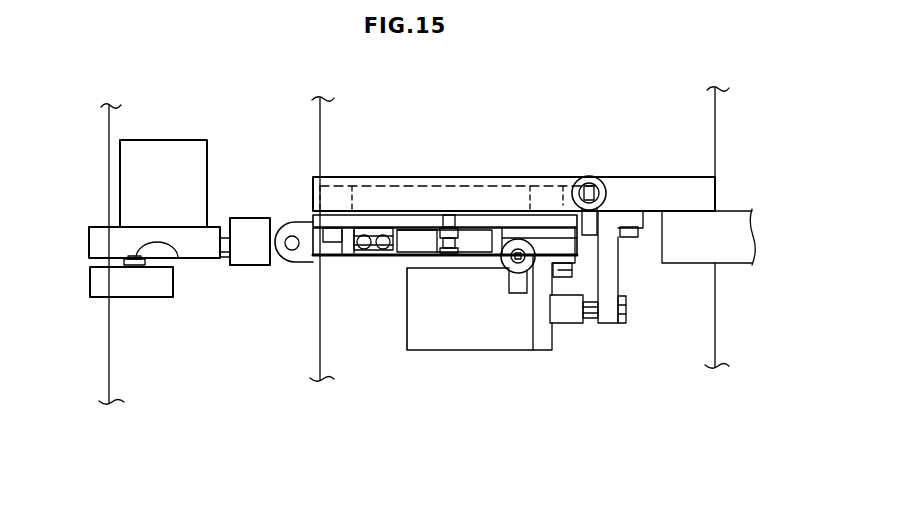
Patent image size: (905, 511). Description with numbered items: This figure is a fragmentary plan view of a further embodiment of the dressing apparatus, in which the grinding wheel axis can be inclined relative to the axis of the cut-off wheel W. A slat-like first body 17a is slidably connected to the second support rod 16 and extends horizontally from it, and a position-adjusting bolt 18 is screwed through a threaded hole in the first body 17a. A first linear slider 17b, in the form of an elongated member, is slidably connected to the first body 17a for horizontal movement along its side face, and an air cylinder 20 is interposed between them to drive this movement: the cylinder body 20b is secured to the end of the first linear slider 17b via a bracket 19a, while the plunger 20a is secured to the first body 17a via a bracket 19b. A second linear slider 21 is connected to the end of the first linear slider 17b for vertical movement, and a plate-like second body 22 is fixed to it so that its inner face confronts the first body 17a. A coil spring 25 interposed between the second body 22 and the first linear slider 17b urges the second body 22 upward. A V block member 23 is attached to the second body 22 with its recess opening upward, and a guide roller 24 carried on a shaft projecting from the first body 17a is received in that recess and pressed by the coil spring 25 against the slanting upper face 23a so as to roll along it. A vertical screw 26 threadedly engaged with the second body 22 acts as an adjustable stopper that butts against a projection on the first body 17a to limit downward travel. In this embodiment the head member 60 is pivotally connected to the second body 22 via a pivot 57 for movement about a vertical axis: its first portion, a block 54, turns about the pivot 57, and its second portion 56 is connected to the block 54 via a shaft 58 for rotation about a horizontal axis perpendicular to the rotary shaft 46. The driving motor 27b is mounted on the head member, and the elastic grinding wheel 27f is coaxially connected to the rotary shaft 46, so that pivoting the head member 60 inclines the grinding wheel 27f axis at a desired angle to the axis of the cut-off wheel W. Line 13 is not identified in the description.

The cut-off wheel W is at (108, 370).
The driving motor 27b is at (178, 148).
The second portion of the head member 56 is at (105, 228).
The rotary shaft 46 is at (160, 255).
The elastic grinding wheel 27f is at (149, 297).
The shaft 58 is at (224, 238).
The block 54 is at (250, 218).
The head member 60 is at (226, 268).
The pivot 57 is at (293, 252).
The reference line 13 is at (318, 128).
The first body 17a is at (683, 192).
The first linear slider 17b is at (404, 220).
The second linear slider 21 is at (341, 258).
The coil spring 25 is at (391, 228).
The second body 22 is at (380, 256).
The V block member 23 is at (437, 254).
The slanting upper face 23a is at (424, 236).
The guide roller 24 is at (453, 246).
The vertical screw 26 is at (514, 273).
The bolt 18 is at (600, 185).
The bracket 19b is at (612, 281).
The second support rod 16 is at (735, 262).
The bracket 19a is at (545, 346).
The plunger 20a is at (573, 313).
The cylinder body 20b is at (428, 348).
The air cylinder 20 is at (482, 354).